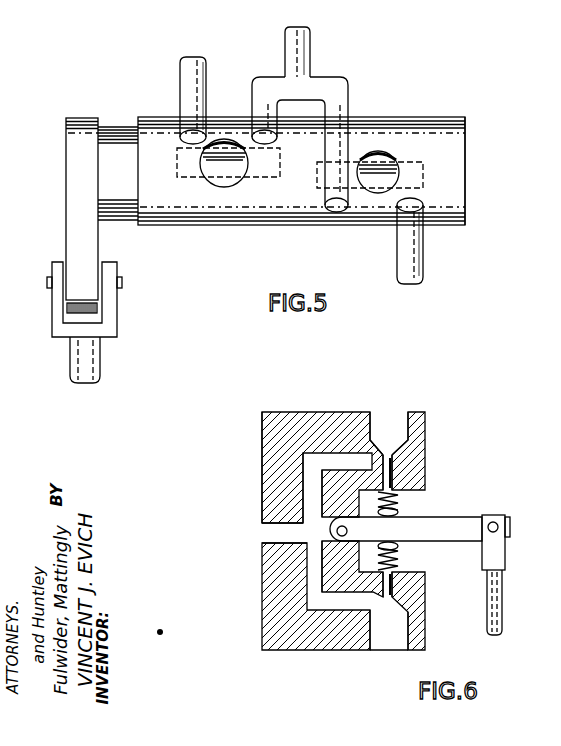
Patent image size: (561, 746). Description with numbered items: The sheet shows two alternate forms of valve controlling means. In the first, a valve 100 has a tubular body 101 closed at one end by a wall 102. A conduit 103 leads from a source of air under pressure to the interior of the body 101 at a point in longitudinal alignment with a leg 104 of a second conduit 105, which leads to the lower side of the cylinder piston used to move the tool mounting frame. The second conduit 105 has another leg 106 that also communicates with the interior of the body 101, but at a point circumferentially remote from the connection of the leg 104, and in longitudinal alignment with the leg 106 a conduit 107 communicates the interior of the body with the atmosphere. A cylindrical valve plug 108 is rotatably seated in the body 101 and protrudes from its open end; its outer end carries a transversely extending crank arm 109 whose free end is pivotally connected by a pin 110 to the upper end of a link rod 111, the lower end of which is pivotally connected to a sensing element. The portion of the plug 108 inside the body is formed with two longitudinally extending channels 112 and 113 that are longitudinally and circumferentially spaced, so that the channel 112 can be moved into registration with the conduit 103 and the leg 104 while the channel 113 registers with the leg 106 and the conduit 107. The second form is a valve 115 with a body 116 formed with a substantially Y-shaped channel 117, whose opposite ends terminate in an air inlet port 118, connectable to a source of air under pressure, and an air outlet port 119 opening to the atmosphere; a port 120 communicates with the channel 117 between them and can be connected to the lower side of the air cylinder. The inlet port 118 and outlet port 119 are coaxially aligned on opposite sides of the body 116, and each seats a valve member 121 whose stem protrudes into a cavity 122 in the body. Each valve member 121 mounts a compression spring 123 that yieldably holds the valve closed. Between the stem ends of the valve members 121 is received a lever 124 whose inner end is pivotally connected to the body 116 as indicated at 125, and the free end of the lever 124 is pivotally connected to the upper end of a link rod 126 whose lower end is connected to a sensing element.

In FIG. 5, the valve 100 is at (377, 110).
In FIG. 5, the tubular body 101 is at (412, 112).
In FIG. 5, the wall 102 is at (465, 142).
In FIG. 5, the conduit 103 is at (180, 72).
In FIG. 5, the leg 104 is at (253, 106).
In FIG. 5, the second conduit 105 is at (310, 45).
In FIG. 5, the leg 106 is at (346, 140).
In FIG. 5, the conduit 107 is at (421, 257).
In FIG. 5, the cylindrical valve plug 108 is at (122, 220).
In FIG. 5, the crank arm 109 is at (77, 223).
In FIG. 5, the pin 110 is at (120, 282).
In FIG. 5, the link rod 111 is at (97, 362).
In FIG. 5, the channel 112 is at (225, 172).
In FIG. 5, the channel 113 is at (380, 182).
In FIG. 6, the valve 115 is at (261, 452).
In FIG. 6, the body 116 is at (262, 486).
In FIG. 6, the Y-shaped channel 117 is at (308, 485).
In FIG. 6, the air inlet port 118 is at (373, 412).
In FIG. 6, the air outlet port 119 is at (378, 645).
In FIG. 6, the port 120 is at (272, 527).
In FIG. 6, the valve member 121 is at (392, 462).
In FIG. 6, the cavity 122 is at (408, 515).
In FIG. 6, the compression spring 123 is at (398, 497).
In FIG. 6, the lever 124 is at (450, 533).
In FIG. 6, the pivotal connection 125 is at (379, 548).
In FIG. 6, the link rod 126 is at (499, 597).